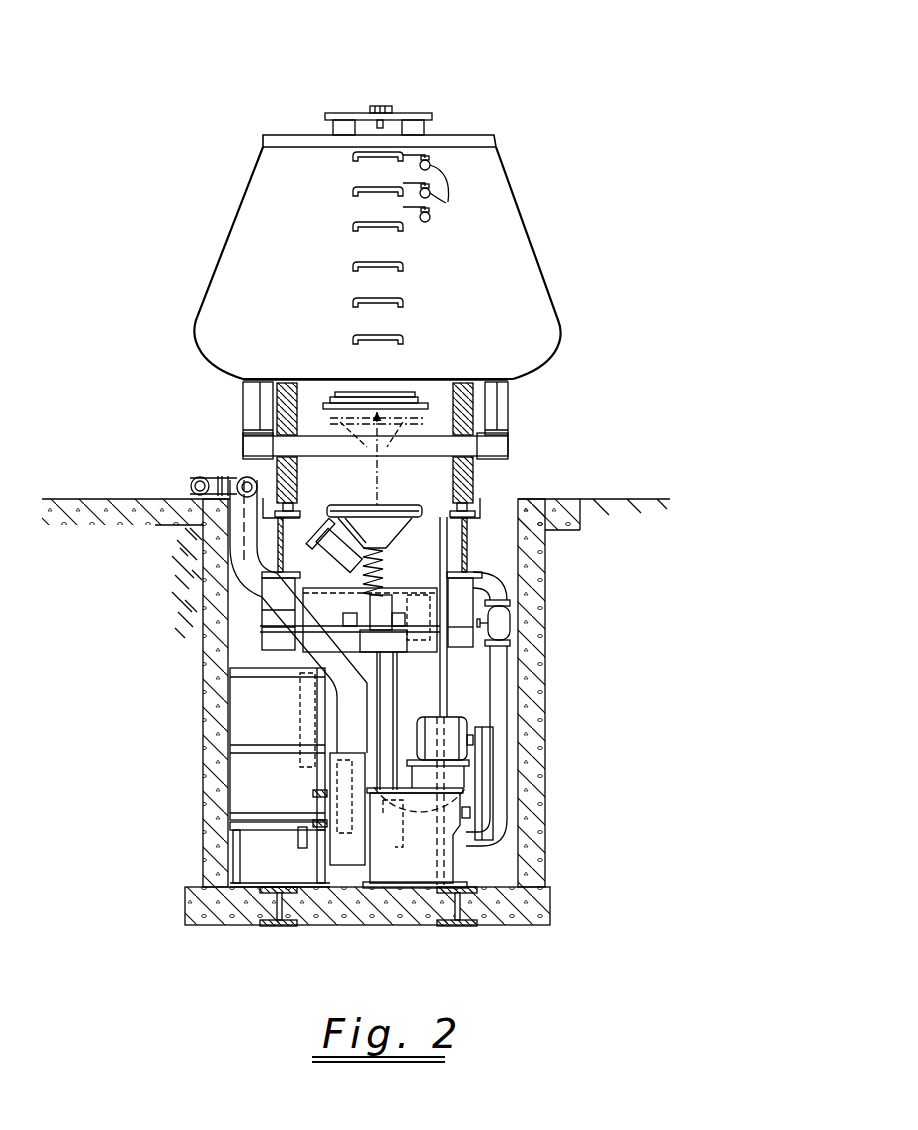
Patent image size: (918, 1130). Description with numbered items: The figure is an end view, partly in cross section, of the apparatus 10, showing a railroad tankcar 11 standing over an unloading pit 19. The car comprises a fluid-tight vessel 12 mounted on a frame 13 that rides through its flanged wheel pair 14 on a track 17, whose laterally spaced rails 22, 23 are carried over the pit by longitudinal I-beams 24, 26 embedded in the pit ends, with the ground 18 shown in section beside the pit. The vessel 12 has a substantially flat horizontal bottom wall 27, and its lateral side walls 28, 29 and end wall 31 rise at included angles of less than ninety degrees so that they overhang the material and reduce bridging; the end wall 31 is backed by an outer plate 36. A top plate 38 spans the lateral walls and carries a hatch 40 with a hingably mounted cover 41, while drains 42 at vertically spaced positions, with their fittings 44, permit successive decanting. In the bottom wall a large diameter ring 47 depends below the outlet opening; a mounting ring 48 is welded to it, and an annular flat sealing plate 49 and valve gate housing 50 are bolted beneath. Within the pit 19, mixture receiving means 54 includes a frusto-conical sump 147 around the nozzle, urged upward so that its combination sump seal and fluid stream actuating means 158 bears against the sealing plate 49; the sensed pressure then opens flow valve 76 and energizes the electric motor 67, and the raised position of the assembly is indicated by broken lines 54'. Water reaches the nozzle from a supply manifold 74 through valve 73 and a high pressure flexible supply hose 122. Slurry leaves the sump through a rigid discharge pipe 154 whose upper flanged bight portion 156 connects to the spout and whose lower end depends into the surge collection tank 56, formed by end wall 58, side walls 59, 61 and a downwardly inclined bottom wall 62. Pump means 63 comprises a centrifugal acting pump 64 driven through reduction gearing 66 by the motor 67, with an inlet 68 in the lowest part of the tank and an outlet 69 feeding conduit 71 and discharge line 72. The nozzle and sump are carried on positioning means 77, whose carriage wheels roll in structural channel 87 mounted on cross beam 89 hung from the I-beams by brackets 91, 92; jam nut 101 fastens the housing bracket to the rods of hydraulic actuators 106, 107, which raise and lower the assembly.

The apparatus 10 is at (546, 61).
The railroad tankcar 11 is at (180, 323).
The fluid-tight vessel 12 is at (542, 268).
The frame 13 is at (510, 407).
The flanged wheel pair 14 is at (297, 481).
The track 17 is at (475, 509).
The ground / concrete pit wall 18 is at (506, 535).
The pit 19 is at (500, 887).
The rail 22 is at (452, 503).
The rail 23 is at (300, 503).
The I-beam 24 is at (468, 551).
The I-beam 26 is at (289, 554).
The bottom wall 27 is at (375, 435).
The lateral side wall 28 is at (531, 233).
The lateral side wall 29 is at (229, 222).
The end wall 31 is at (488, 240).
The outer plate 36 is at (316, 281).
The top plate 38 is at (462, 134).
The hatch 40 is at (333, 126).
The hingably mounted cover 41 is at (405, 113).
The drain 42 is at (473, 176).
The lamps 44 is at (444, 200).
The large diameter ring 47 is at (348, 389).
The mounting ring 48 is at (404, 393).
The annular flat sealing plate 49 is at (328, 409).
The valve gate housing 50 is at (390, 380).
The mixture receiving means 54 is at (370, 548).
The flow direction 54' is at (378, 458).
The surge collection tank 56 is at (226, 786).
The end wall 58 is at (281, 718).
The side wall 59 is at (332, 722).
The side wall 61 is at (222, 733).
The downwardly inclined bottom wall 62 is at (268, 838).
The pump means 63 is at (469, 709).
The centrifugal acting pump 64 is at (342, 866).
The reduction gearing 66 is at (428, 865).
The electric motor 67 is at (450, 717).
The inlet 68 is at (318, 817).
The outlet 69 is at (340, 756).
The conduit 71 is at (265, 606).
The discharge line 72 is at (244, 478).
The valve 73 is at (499, 586).
The supply manifold 74 is at (191, 482).
The flow valve 76 is at (511, 624).
The positioning means 77 is at (418, 666).
The structural channel 87 is at (412, 633).
The cross beam 89 is at (413, 628).
The bracket 91 is at (265, 640).
The bracket 92 is at (470, 620).
The jam nut 101 is at (343, 620).
The actuator 106 is at (361, 836).
The actuator 107 is at (384, 835).
The high pressure flexible supply hose 122 is at (497, 695).
The sump 147 is at (398, 534).
The rigid discharge pipe 154 is at (282, 667).
The upper flanged bight portion 156 is at (315, 574).
The combination sump seal and fluid stream actuating means 158 is at (353, 502).